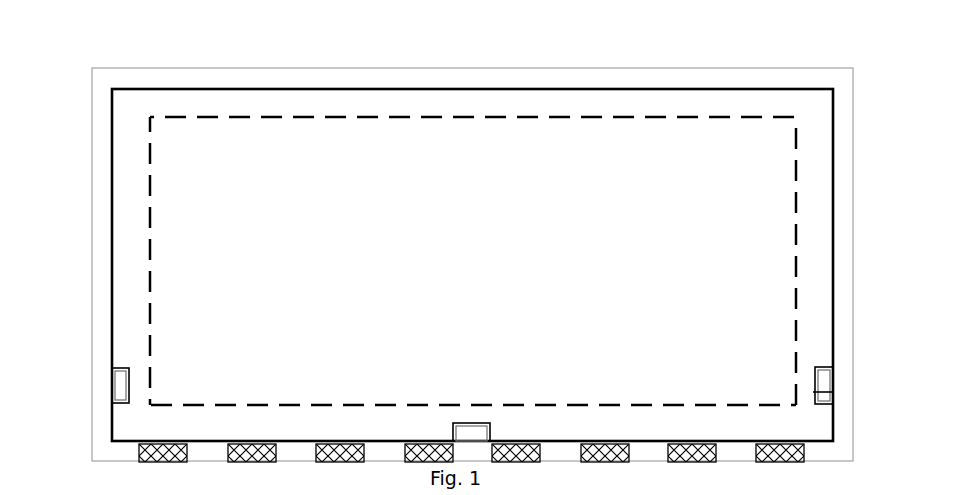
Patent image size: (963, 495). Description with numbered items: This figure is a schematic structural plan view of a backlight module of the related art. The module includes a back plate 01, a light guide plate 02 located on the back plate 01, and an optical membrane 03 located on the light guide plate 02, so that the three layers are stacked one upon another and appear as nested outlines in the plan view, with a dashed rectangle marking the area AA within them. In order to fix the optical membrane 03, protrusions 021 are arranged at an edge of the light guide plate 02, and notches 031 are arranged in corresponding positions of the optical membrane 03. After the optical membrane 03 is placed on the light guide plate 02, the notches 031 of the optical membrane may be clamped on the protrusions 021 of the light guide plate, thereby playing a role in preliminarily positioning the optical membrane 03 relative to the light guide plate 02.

The back plate 01 is at (358, 68).
The light guide plate 02 is at (473, 89).
The optical membrane 03 is at (586, 92).
The display area AA is at (150, 260).
The protrusions 021 is at (826, 378).
The notches 031 is at (813, 392).